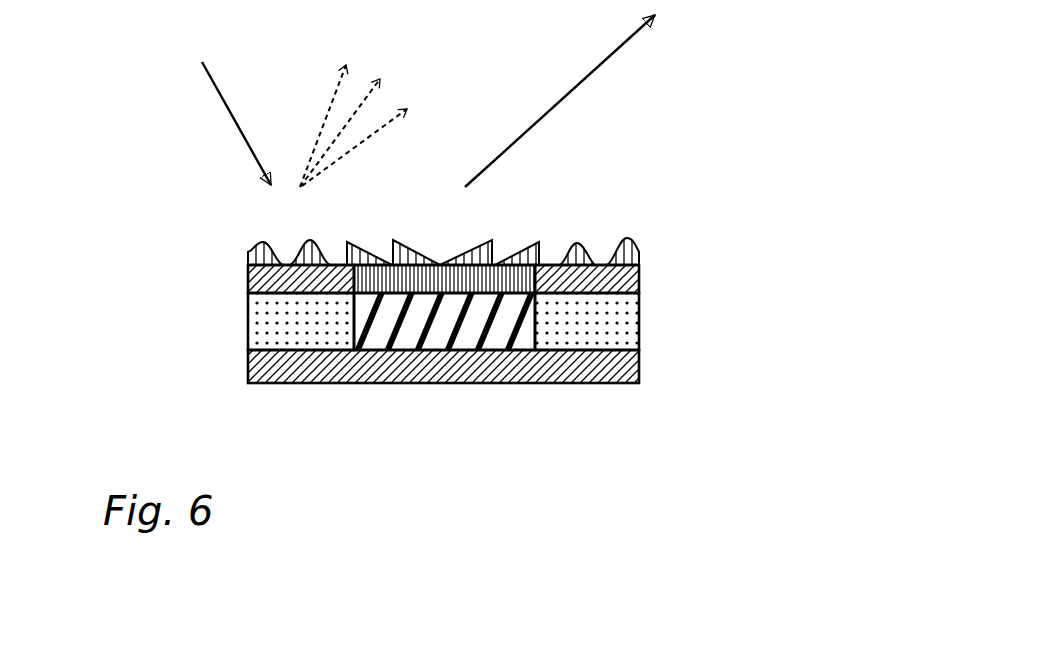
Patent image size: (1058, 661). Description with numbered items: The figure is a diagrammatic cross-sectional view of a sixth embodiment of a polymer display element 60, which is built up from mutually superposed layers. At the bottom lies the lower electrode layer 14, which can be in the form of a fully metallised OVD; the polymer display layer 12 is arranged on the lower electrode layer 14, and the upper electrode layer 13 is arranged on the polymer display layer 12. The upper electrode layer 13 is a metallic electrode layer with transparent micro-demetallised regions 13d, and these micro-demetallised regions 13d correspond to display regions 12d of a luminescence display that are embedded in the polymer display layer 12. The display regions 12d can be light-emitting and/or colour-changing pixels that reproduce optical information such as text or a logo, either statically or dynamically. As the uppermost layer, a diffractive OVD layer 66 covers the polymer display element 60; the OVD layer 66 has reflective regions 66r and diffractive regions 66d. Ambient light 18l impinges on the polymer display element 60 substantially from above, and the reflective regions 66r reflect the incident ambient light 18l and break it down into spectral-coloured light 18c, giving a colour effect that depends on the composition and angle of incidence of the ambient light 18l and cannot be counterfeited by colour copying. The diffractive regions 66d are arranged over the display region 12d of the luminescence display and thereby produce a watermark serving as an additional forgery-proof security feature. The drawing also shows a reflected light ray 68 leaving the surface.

The ambient light 18l is at (238, 118).
The spectral-coloured light 18c is at (348, 157).
The specularly reflected light 68 is at (572, 88).
The diffractive OVD layer 66 is at (490, 232).
The reflective regions 66r is at (343, 240).
The diffractive regions 66d is at (537, 238).
The upper electrode layer 13 is at (458, 330).
The micro-demetallised regions 13d is at (352, 300).
The polymer display layer 12 is at (490, 370).
The display regions 12d is at (473, 340).
The lower electrode layer 14 is at (641, 365).
The polymer display element 60 is at (519, 324).